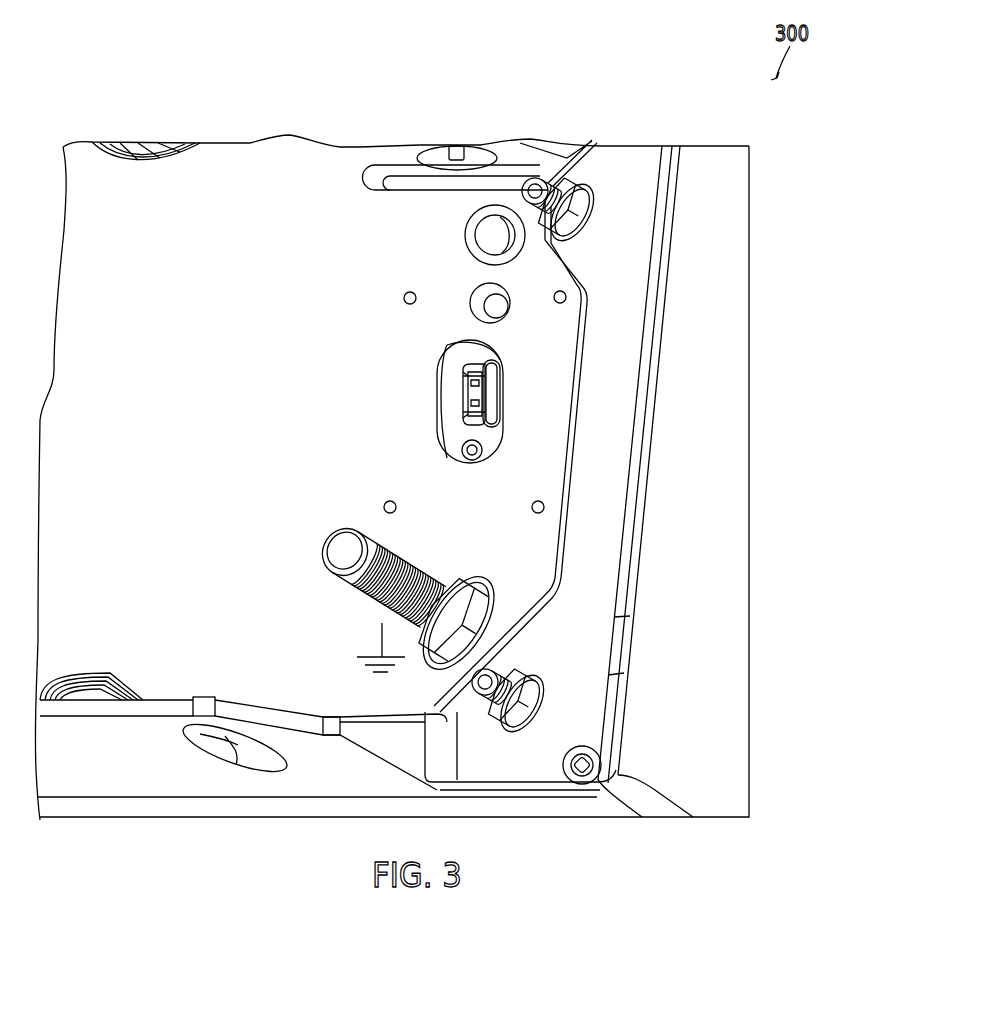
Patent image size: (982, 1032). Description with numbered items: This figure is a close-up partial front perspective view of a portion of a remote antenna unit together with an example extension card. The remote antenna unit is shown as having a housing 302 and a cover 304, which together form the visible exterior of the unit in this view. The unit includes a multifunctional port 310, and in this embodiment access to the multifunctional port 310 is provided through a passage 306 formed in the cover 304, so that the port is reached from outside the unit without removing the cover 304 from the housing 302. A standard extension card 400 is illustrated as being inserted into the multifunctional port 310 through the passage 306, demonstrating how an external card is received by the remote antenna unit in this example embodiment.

The housing 302 is at (735, 219).
The cover 304 is at (607, 477).
The passage 306 is at (440, 425).
The multifunctional port 310 is at (500, 374).
The standard extension card 400 is at (462, 390).